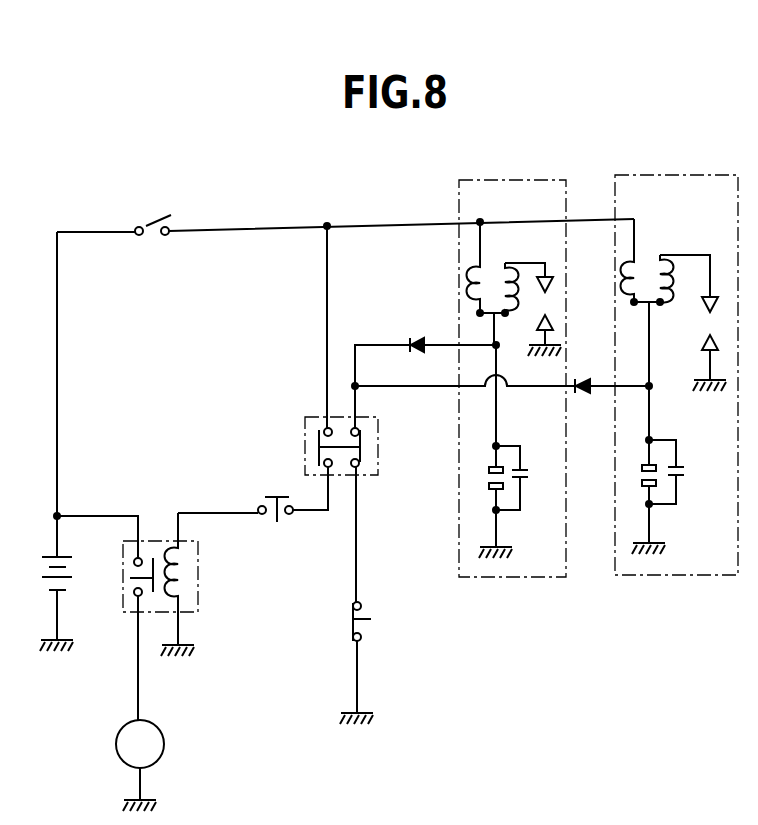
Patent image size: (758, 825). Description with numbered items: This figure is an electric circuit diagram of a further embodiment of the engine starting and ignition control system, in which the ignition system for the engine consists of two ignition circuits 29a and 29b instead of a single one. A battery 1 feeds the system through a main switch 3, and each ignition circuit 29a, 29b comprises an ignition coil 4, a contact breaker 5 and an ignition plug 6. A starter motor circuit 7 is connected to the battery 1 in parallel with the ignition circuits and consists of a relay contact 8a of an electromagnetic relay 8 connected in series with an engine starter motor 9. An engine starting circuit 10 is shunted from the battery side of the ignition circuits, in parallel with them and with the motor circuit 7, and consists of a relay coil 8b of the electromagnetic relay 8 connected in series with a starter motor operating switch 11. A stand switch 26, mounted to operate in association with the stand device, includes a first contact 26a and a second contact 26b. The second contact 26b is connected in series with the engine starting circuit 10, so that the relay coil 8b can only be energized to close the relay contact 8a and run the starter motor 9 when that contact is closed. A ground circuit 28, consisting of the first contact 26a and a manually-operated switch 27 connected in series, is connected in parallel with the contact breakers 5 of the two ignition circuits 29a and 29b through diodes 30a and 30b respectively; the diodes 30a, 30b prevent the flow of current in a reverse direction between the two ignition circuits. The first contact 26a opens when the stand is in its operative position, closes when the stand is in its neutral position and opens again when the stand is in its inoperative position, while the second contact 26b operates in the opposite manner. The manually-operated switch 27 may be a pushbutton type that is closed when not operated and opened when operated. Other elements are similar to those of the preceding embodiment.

The battery 1 is at (45, 579).
The main switch 3 is at (150, 224).
The ignition coil 4 is at (478, 285).
The contact breaker 5 is at (490, 471).
The ignition plug 6 is at (550, 309).
The starter motor circuit 7 is at (88, 515).
The electromagnetic relay 8 is at (166, 567).
The relay contact 8a is at (130, 578).
The relay coil 8b is at (191, 572).
The engine starter motor 9 is at (116, 746).
The engine starting circuit 10 is at (326, 290).
The starter motor operating switch 11 is at (270, 497).
The stand switch 26 is at (344, 414).
The first contact 26a is at (362, 457).
The second contact 26b is at (319, 447).
The manually-operated switch 27 is at (353, 625).
The ground circuit 28 is at (358, 572).
The ignition circuit 29a is at (508, 180).
The ignition circuit 29b is at (670, 175).
The diode 30a is at (418, 338).
The diode 30b is at (583, 392).